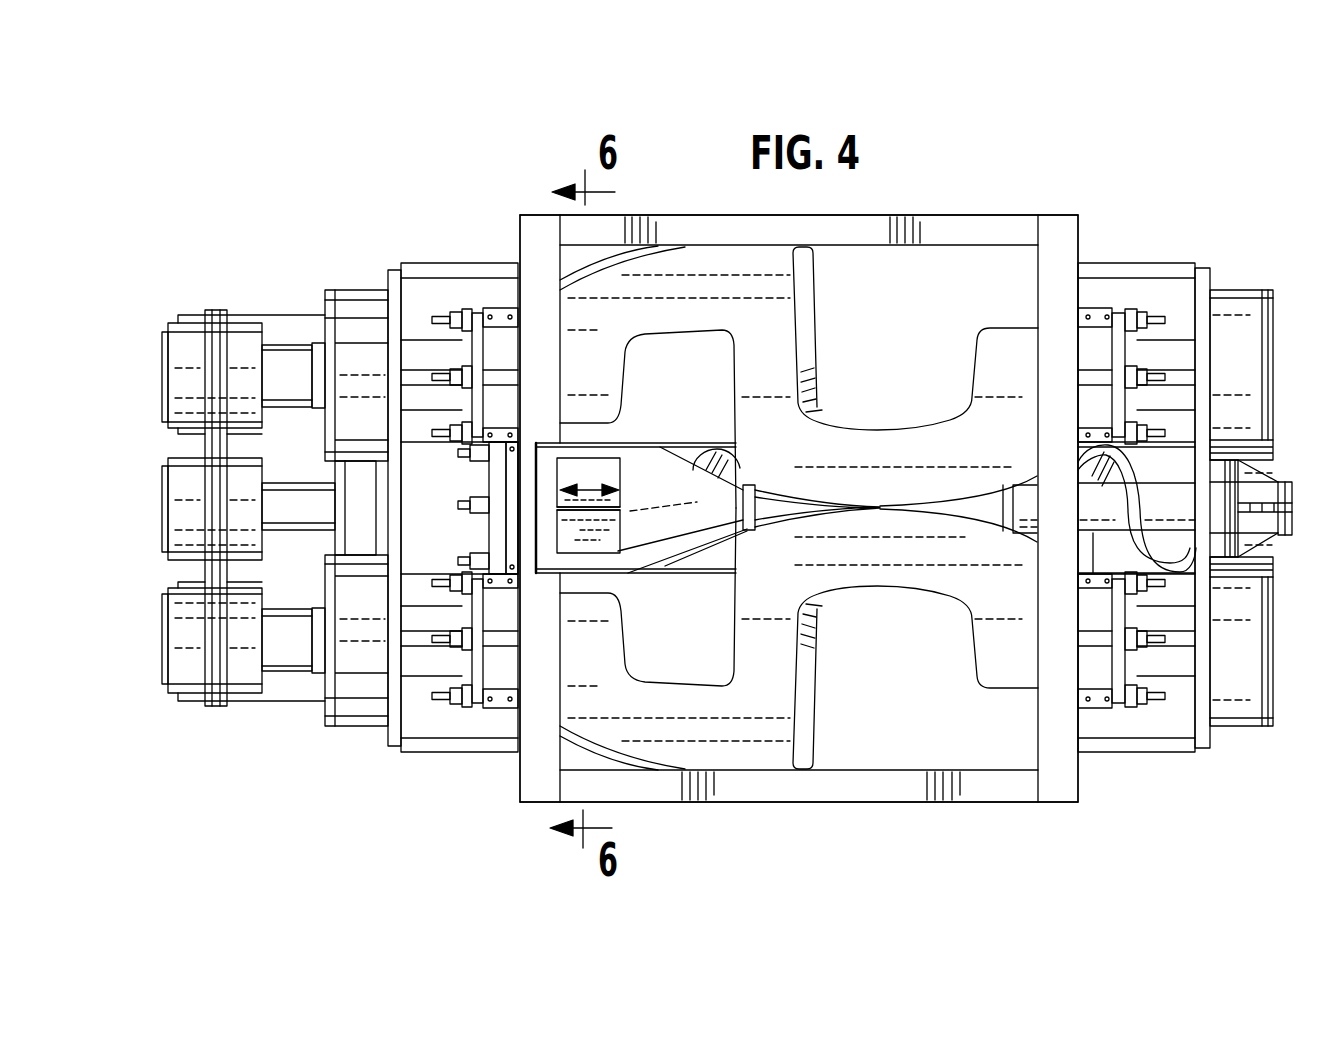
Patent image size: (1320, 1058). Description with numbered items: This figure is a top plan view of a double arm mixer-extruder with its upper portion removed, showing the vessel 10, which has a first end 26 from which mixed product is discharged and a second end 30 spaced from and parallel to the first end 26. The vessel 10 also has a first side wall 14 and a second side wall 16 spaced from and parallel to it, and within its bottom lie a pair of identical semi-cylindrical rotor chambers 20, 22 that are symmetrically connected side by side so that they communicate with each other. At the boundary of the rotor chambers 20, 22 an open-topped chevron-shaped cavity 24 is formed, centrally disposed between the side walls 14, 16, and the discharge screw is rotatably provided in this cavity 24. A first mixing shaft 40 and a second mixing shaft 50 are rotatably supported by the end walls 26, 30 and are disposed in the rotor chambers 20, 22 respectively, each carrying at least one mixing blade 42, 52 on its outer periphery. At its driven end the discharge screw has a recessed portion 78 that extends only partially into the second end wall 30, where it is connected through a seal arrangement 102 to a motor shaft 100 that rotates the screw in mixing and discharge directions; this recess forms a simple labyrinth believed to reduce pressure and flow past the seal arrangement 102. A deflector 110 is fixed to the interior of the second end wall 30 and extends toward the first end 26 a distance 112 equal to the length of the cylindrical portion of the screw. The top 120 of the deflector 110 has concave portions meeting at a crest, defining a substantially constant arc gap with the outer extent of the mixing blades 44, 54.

The vessel 10 is at (1095, 122).
The first side wall 14 is at (963, 228).
The second side wall 16 is at (987, 790).
The rotor chamber 20 is at (901, 685).
The rotor chamber 22 is at (885, 344).
The chevron-shaped cavity 24 is at (705, 557).
The first end 26 is at (1062, 240).
The second end 30 is at (532, 770).
The first mixing shaft 40 is at (289, 650).
The mixing blade 42 is at (750, 743).
The mixing blade 44 is at (623, 760).
The second mixing shaft 50 is at (291, 358).
The mixing blade 52 is at (728, 232).
The mixing blade 54 is at (616, 230).
The recessed portion 78 is at (518, 448).
The motor shaft 100 is at (297, 498).
The seal arrangement 102 is at (498, 531).
The deflector 110 is at (568, 473).
The distance 112 is at (592, 483).
The top of the deflector 120 is at (577, 537).